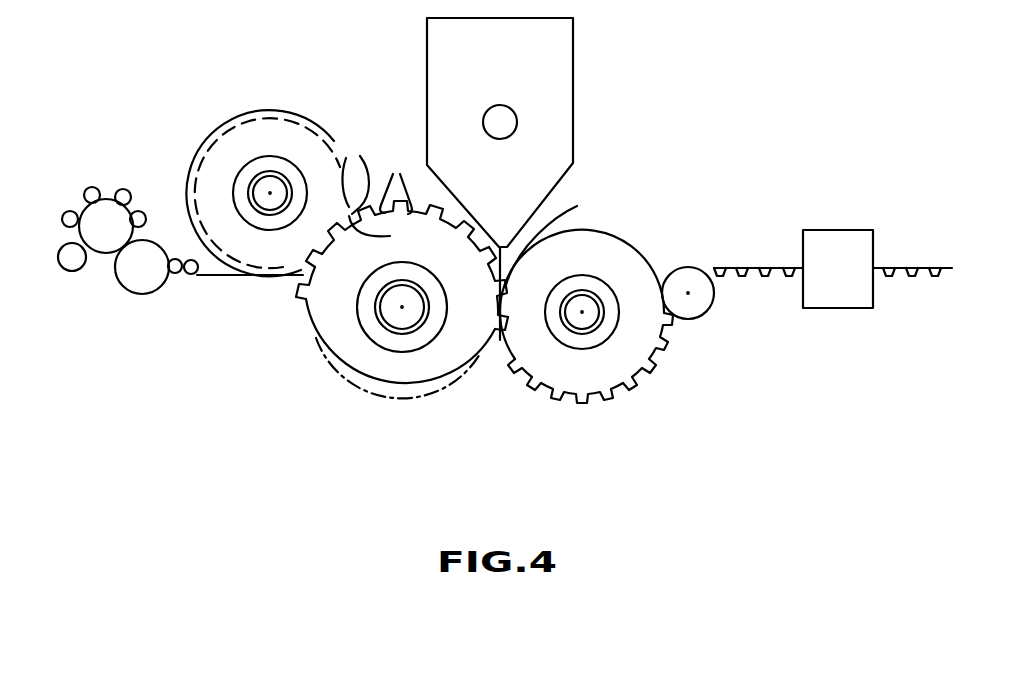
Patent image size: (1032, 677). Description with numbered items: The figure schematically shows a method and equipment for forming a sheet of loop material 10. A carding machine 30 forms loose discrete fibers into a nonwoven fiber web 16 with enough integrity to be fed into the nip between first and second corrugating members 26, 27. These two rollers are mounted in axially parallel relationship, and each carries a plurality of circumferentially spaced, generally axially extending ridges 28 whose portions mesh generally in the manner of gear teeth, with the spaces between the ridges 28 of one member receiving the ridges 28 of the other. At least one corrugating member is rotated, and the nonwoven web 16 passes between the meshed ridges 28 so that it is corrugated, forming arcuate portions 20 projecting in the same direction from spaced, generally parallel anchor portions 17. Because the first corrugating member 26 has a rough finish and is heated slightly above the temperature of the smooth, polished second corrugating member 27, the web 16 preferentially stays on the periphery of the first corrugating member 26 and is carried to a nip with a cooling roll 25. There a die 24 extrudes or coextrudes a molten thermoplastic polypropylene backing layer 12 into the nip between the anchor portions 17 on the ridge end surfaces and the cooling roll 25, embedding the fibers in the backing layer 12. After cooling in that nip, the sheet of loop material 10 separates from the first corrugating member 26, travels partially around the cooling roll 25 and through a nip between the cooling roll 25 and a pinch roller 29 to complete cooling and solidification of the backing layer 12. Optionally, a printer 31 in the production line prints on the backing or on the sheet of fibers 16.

The sheet of loop material 10 is at (718, 255).
The backing layer 12 is at (760, 223).
The nonwoven fiber web 16 is at (210, 290).
The anchor portions 17 is at (403, 178).
The arcuate portions 20 is at (428, 218).
The die 24 is at (562, 149).
The cooling roll 25 is at (565, 388).
The first corrugating member 26 is at (418, 397).
The second corrugating member 27 is at (258, 132).
The ridges 28 is at (336, 146).
The pinch roller 29 is at (698, 304).
The carding machine 30 is at (107, 207).
The printer 31 is at (850, 297).